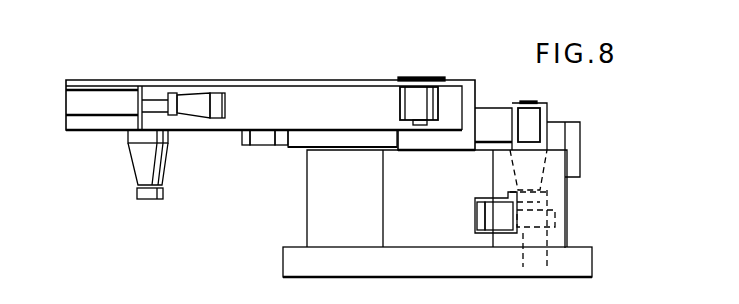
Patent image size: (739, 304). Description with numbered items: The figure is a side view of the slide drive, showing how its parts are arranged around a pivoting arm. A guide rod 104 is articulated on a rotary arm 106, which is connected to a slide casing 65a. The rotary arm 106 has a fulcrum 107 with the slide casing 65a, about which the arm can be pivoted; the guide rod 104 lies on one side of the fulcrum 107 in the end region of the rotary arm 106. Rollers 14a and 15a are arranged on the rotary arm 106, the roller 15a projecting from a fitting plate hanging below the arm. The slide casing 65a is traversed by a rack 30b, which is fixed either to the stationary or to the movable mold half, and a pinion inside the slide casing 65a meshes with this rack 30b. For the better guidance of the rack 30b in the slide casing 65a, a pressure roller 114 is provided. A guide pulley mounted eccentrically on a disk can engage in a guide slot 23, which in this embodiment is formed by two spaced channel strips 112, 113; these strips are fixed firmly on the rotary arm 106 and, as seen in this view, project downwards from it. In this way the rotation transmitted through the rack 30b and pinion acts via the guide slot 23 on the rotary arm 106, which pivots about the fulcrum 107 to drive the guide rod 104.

The rotary arm 106 is at (134, 80).
The guide rod 104 is at (197, 102).
The channel strip 112 is at (245, 137).
The guide slot 23 is at (267, 137).
The channel strip 113 is at (283, 135).
The fulcrum 107 is at (423, 79).
The roller 15a is at (142, 194).
The slide casing 65a is at (327, 213).
The rack 30b is at (498, 225).
The roller 14a is at (548, 193).
The pressure roller 114 is at (556, 220).